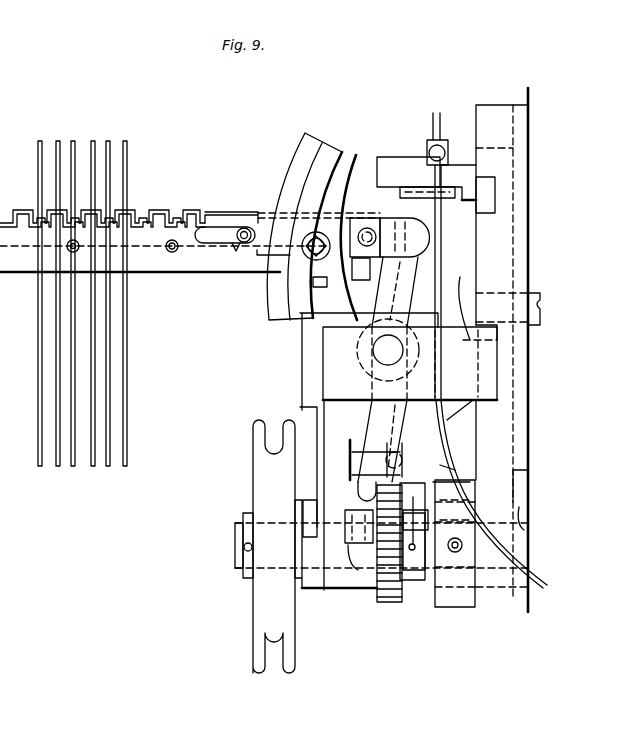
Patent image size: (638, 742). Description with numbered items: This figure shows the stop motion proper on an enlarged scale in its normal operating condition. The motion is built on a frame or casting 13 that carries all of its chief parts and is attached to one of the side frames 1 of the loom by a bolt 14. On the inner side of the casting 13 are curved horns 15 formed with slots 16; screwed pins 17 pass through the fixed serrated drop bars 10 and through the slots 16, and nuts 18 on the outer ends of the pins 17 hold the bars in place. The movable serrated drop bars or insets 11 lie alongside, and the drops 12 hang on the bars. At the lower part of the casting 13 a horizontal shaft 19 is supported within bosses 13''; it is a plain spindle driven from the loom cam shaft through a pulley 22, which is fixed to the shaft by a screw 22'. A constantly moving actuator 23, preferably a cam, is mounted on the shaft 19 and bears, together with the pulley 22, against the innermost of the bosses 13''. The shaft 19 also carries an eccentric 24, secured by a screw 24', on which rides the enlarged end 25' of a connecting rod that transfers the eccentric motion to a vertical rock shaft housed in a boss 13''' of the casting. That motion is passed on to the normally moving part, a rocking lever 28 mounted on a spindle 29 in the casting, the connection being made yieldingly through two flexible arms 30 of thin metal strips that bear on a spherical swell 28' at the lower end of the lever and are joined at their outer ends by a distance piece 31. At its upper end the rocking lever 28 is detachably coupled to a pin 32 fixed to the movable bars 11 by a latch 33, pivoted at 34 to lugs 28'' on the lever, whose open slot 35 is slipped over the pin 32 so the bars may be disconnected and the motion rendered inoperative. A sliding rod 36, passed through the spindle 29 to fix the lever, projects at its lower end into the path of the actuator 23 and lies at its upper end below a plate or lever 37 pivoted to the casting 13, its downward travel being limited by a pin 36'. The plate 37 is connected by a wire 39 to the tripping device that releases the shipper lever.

The side frame 1 is at (530, 277).
The fixed serrated drop bars 10 is at (157, 272).
The movable serrated drop bars 11 is at (205, 213).
The drops 12 is at (73, 468).
The casting 13 is at (482, 302).
The bosses 13'' is at (404, 557).
The boss 13''' is at (468, 341).
The bolt 14 is at (543, 311).
The curved horns 15 is at (305, 150).
The slots 16 is at (330, 183).
The screwed pins 17 is at (300, 268).
The nuts 18 is at (308, 282).
The horizontal shaft 19 is at (244, 548).
The pulley 22 is at (362, 546).
The screw 22' is at (214, 560).
The actuator 23 is at (393, 604).
The eccentric 24 is at (457, 566).
The screw 24' is at (511, 539).
The enlarged end 25' is at (431, 577).
The rocking lever 28 is at (410, 379).
The spherical swell 28' is at (472, 500).
The lugs 28'' is at (428, 237).
The spindle 29 is at (386, 352).
The flexible arms 30 is at (352, 452).
The distance piece 31 is at (448, 470).
The pin 32 is at (237, 243).
The latch 33 is at (238, 227).
The pivot 34 is at (373, 264).
The open slot 35 is at (254, 256).
The sliding rod 36 is at (423, 255).
The pin 36' is at (436, 201).
The plate or lever 37 is at (383, 175).
The wire 39 is at (442, 122).